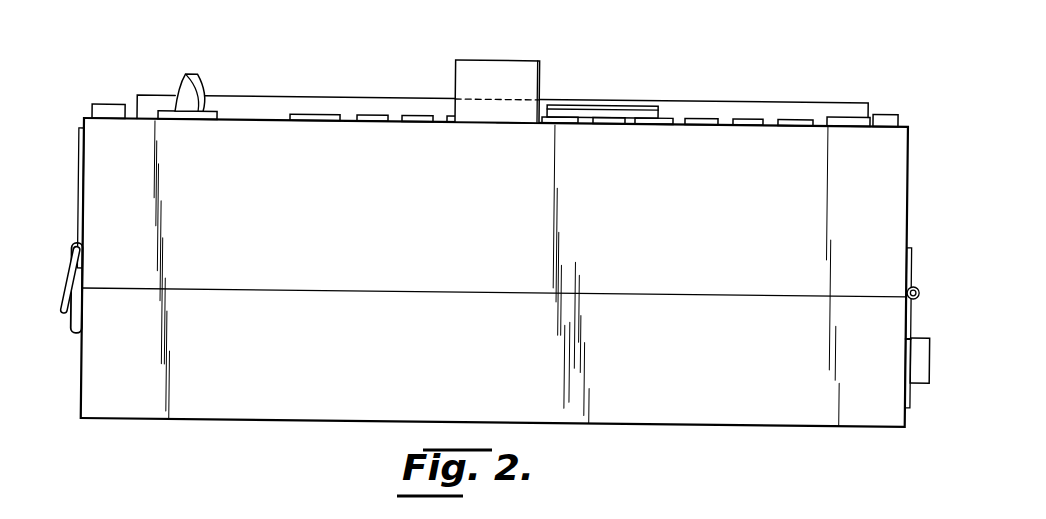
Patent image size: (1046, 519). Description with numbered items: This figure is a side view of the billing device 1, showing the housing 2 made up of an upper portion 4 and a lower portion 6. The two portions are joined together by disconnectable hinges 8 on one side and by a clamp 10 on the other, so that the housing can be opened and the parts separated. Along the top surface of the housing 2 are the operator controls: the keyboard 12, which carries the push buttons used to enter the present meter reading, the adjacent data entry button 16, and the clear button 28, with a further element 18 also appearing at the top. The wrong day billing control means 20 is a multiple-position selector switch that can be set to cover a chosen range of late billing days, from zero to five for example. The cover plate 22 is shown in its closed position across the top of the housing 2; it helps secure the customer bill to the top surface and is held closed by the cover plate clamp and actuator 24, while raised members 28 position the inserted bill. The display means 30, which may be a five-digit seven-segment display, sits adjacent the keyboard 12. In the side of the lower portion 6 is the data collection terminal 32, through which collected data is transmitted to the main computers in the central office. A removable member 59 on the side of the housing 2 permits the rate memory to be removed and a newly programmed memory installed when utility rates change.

The billing device 1 is at (283, 83).
The housing 2 is at (916, 159).
The upper portion 4 is at (93, 183).
The lower portion 6 is at (603, 412).
The disconnectable hinges 8 is at (918, 287).
The clamp 10 is at (67, 265).
The keyboard 12 is at (728, 118).
The data entry button 16 is at (313, 117).
The end tab 18 is at (840, 127).
The wrong day billing control means 20 is at (182, 93).
The cover plate 22 is at (750, 103).
The cover plate clamp and actuator 24 is at (488, 65).
The raised members 28 is at (110, 108).
The display means 30 is at (588, 110).
The data collection terminal 32 is at (917, 375).
The member 59 is at (80, 153).